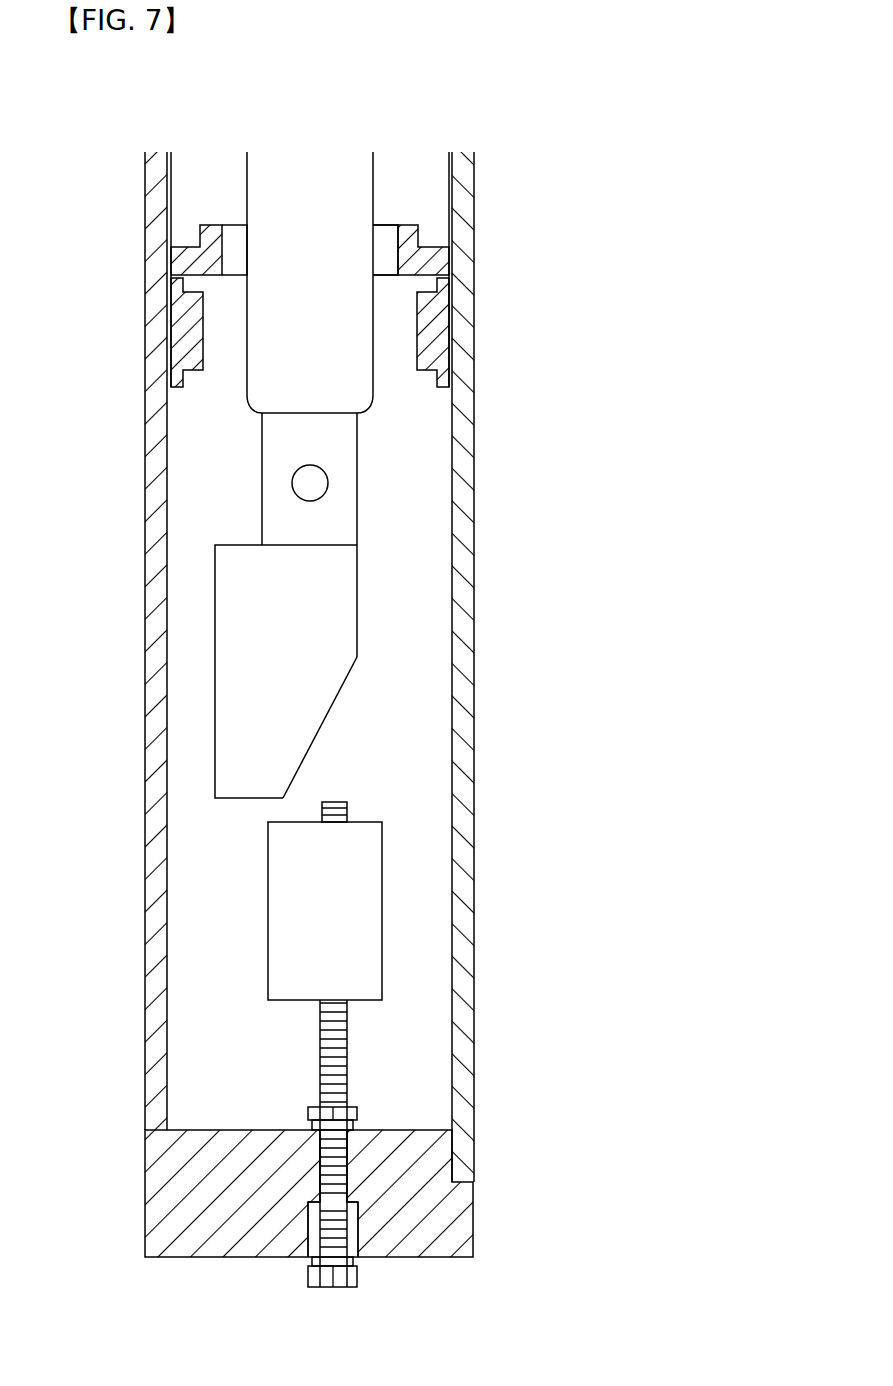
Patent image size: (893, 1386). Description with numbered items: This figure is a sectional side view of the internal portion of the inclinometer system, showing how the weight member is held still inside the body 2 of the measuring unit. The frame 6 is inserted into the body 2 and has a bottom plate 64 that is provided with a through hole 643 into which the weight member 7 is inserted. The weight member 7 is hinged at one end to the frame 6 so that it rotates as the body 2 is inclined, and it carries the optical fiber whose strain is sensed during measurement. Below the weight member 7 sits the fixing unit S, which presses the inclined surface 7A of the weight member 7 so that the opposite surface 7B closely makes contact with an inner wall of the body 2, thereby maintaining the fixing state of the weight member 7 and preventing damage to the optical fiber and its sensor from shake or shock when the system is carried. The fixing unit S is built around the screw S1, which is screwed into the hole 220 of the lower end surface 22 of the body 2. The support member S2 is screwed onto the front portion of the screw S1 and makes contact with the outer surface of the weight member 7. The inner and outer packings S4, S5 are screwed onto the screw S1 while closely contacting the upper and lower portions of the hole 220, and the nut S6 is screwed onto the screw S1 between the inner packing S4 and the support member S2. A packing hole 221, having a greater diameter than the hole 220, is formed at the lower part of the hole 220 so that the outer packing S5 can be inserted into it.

The body 2 is at (150, 482).
The frame 6 is at (182, 201).
The bottom plate 64 is at (427, 260).
The through hole 643 is at (377, 245).
The weight member 7 is at (311, 475).
The inclined surface 7A is at (323, 722).
The opposite surface 7B is at (215, 622).
The fixing unit S is at (421, 1071).
The screw S1 is at (347, 1040).
The support member S2 is at (360, 855).
The inner packing S4 is at (353, 1126).
The outer packing S5 is at (350, 1262).
The nut S6 is at (357, 1108).
The lower end surface 22 is at (322, 1235).
The hole 220 is at (322, 1160).
The packing hole 221 is at (350, 1217).